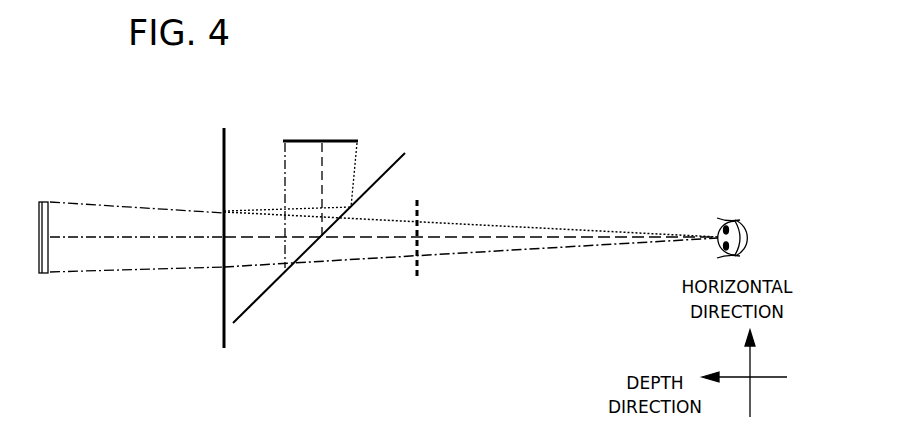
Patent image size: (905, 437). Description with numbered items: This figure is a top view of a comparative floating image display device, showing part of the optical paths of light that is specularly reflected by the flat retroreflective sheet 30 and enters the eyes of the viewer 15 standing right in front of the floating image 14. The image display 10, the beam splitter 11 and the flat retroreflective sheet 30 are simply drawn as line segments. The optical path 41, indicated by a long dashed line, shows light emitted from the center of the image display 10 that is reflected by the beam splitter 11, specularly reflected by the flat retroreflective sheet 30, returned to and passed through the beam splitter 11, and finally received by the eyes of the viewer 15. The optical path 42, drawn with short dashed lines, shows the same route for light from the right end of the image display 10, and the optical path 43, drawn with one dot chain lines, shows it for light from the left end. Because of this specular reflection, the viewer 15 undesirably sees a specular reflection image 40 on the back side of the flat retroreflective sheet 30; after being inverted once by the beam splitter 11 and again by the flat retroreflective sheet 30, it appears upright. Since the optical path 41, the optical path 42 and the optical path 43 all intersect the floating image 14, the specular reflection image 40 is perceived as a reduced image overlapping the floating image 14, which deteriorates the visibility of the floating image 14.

The image display 10 is at (305, 141).
The beam splitter 11 is at (398, 157).
The floating image 14 is at (417, 200).
The viewer 15 is at (743, 219).
The flat retroreflective sheet 30 is at (224, 142).
The specular reflection image 40 is at (42, 201).
The optical path 41 is at (493, 240).
The optical path 42 is at (482, 223).
The optical path 43 is at (550, 247).